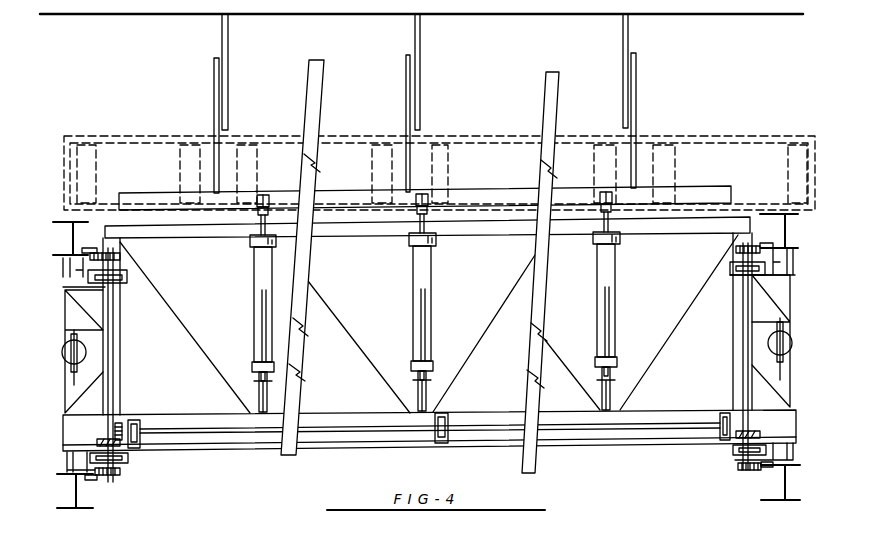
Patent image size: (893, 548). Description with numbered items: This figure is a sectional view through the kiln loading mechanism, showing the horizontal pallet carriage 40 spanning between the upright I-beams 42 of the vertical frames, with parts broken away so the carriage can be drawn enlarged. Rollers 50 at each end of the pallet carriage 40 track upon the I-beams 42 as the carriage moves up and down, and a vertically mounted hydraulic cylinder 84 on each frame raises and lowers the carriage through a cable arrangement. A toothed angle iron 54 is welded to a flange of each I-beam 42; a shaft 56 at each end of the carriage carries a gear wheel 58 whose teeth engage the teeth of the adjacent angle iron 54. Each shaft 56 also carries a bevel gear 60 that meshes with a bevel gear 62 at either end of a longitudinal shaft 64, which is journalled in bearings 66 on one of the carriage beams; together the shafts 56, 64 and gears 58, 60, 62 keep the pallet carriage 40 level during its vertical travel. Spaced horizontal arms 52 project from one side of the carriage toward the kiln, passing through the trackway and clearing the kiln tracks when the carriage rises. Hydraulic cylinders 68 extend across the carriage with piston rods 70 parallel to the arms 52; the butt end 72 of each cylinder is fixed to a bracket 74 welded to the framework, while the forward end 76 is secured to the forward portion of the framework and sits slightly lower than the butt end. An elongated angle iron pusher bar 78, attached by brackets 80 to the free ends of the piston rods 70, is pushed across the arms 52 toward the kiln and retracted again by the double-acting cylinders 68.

The pallet carriage 40 is at (660, 447).
The I-beam 42 is at (62, 222).
The roller 50 is at (66, 272).
The arm 52 is at (214, 75).
The angle iron 54 is at (92, 250).
The shaft 56 is at (120, 351).
The gear wheel 58 is at (122, 257).
The bevel gear 60 is at (98, 441).
The bevel gear 62 is at (122, 425).
The shaft 64 is at (330, 413).
The bearing 66 is at (138, 447).
The hydraulic cylinder 68 is at (255, 295).
The piston rod 70 is at (252, 239).
The butt end 72 is at (252, 364).
The bracket 74 is at (255, 408).
The forward end 76 is at (257, 250).
The angle iron pusher bar 78 is at (512, 197).
The bracket 80 is at (266, 196).
The hydraulic cylinder 84 is at (789, 342).